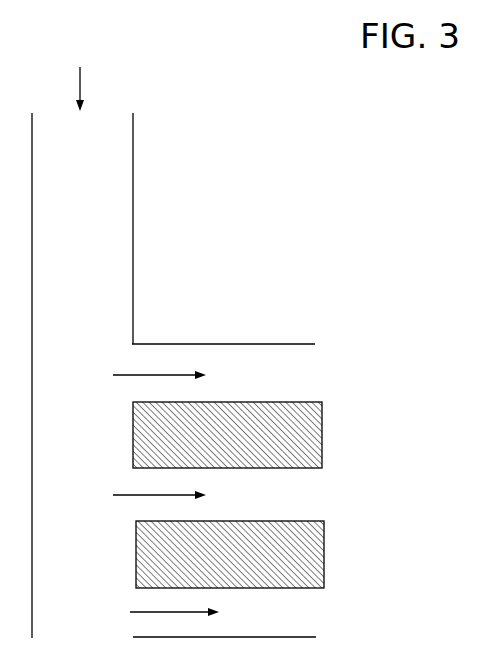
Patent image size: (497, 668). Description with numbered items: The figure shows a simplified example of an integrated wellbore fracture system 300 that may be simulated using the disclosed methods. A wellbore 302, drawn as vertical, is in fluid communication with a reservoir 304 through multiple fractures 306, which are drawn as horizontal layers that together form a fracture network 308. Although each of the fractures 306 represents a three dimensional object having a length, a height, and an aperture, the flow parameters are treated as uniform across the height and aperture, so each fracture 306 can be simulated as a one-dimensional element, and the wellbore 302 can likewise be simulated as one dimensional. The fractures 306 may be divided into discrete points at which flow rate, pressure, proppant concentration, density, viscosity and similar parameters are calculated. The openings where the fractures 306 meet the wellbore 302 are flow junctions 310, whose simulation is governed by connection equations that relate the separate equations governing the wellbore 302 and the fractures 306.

The integrated wellbore fracture system 300 is at (334, 223).
The wellbore 302 is at (133, 243).
The reservoir 304 is at (192, 344).
The fracture network 308 is at (362, 463).
The fractures 306 is at (302, 605).
The flow junctions 310 is at (133, 623).